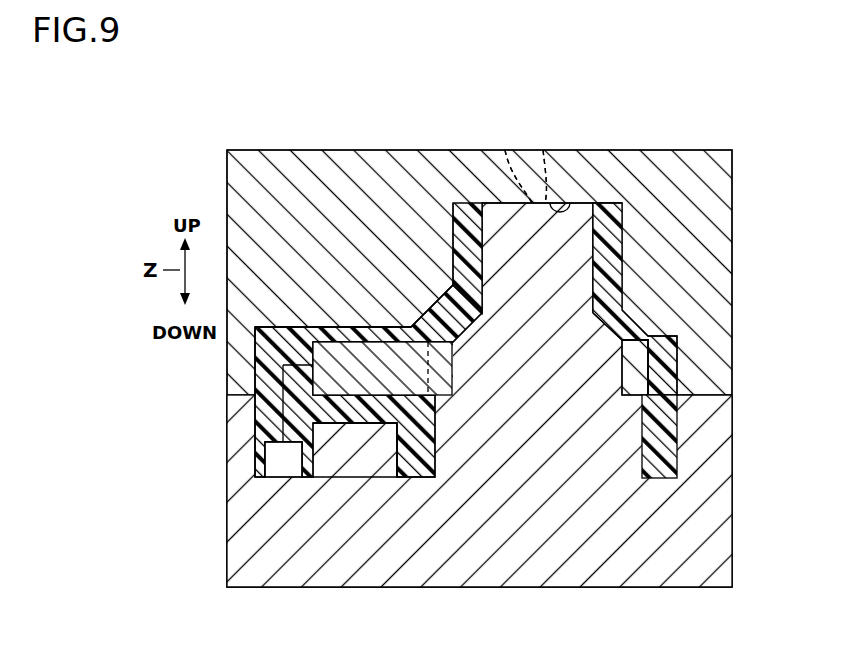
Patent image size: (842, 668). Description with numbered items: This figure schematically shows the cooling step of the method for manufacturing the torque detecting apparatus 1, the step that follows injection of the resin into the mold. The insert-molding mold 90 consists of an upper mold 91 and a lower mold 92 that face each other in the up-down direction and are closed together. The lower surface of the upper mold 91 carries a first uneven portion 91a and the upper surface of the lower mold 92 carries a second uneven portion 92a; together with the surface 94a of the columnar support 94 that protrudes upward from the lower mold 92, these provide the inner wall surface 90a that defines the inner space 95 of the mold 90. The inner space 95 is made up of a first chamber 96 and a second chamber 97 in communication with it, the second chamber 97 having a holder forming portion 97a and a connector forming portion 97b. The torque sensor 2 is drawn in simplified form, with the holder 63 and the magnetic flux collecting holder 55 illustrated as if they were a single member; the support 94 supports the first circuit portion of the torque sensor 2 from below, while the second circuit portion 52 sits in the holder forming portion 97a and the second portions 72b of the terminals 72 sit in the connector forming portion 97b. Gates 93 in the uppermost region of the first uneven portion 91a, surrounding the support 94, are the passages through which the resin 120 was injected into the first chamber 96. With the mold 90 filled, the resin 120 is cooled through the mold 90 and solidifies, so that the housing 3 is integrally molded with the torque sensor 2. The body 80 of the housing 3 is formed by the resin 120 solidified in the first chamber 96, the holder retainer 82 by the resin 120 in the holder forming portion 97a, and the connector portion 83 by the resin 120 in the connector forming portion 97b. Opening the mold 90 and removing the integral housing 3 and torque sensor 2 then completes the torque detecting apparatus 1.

The torque detecting apparatus 1 is at (630, 234).
The torque sensor 2 is at (462, 371).
The housing 3 is at (607, 256).
The second circuit portion 52 is at (355, 450).
The magnetic flux collecting holder 55 is at (612, 369).
The holder 63 is at (350, 385).
The terminals 72 is at (283, 459).
The second portion 72b is at (280, 458).
The body 80 is at (600, 204).
The holder retainer 82 is at (363, 335).
The connector portion 83 is at (345, 405).
The mold 90 is at (479, 368).
The inner wall surface 90a is at (568, 203).
The upper mold 91 is at (713, 146).
The first uneven portion 91a is at (525, 176).
The lower mold 92 is at (678, 596).
The second uneven portion 92a is at (678, 463).
The gates 93 is at (469, 203).
The support 94 is at (607, 253).
The surface 94a is at (622, 272).
The inner space 95 is at (473, 97).
The first chamber 96 is at (452, 259).
The second chamber 97 is at (307, 324).
The holder forming portion 97a is at (337, 327).
The connector forming portion 97b is at (254, 388).
The resin 120 is at (453, 196).